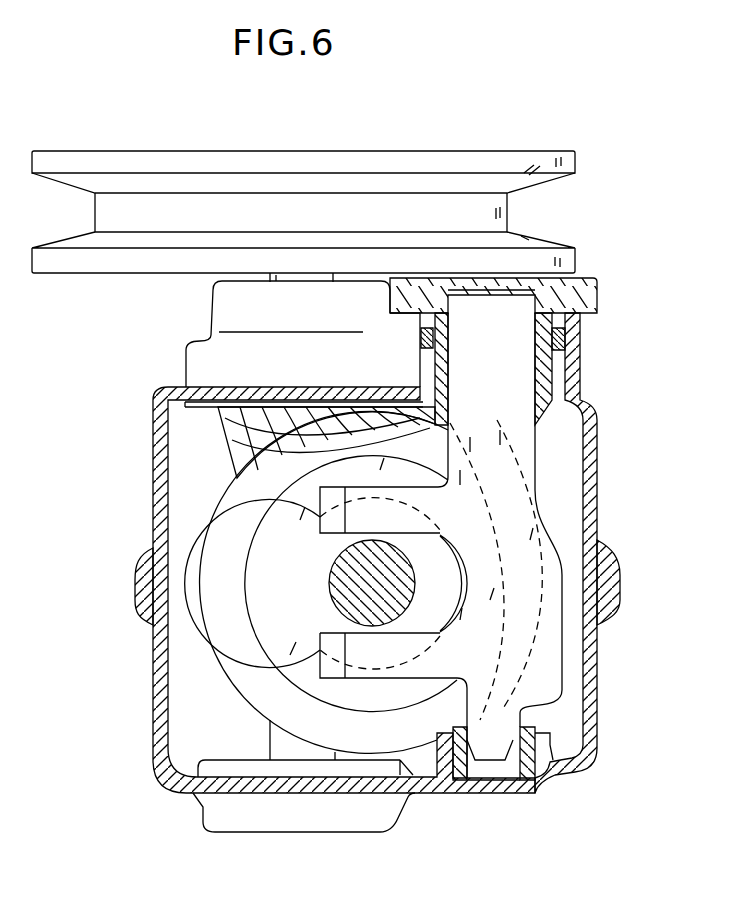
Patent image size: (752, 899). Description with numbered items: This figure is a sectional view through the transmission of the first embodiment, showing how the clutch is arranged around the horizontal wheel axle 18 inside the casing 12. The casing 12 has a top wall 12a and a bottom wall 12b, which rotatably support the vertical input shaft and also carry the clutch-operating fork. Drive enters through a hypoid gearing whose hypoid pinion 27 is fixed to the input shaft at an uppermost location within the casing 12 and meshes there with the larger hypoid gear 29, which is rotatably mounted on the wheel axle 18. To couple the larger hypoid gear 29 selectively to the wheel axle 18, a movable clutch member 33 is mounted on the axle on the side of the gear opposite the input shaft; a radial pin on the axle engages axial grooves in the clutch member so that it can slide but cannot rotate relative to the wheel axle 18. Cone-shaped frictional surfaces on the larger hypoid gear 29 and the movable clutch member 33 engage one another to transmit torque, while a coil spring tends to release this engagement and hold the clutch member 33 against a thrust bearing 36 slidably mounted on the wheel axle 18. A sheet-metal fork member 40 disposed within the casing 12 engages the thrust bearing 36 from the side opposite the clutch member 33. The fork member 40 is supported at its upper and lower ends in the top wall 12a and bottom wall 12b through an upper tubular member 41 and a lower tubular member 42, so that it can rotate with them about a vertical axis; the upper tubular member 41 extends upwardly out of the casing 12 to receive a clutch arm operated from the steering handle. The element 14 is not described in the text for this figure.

The pulley 14 is at (576, 160).
The casing 12 is at (152, 528).
The top wall 12a is at (220, 385).
The bottom wall 12b is at (367, 783).
The hypoid pinion 27 is at (237, 428).
The larger hypoid gear 29 is at (203, 613).
The movable clutch member 33 is at (297, 675).
The thrust bearing 36 is at (313, 555).
The wheel axle 18 is at (358, 585).
The fork member 40 is at (483, 633).
The upper tubular member 41 is at (543, 370).
The lower tubular member 42 is at (540, 770).